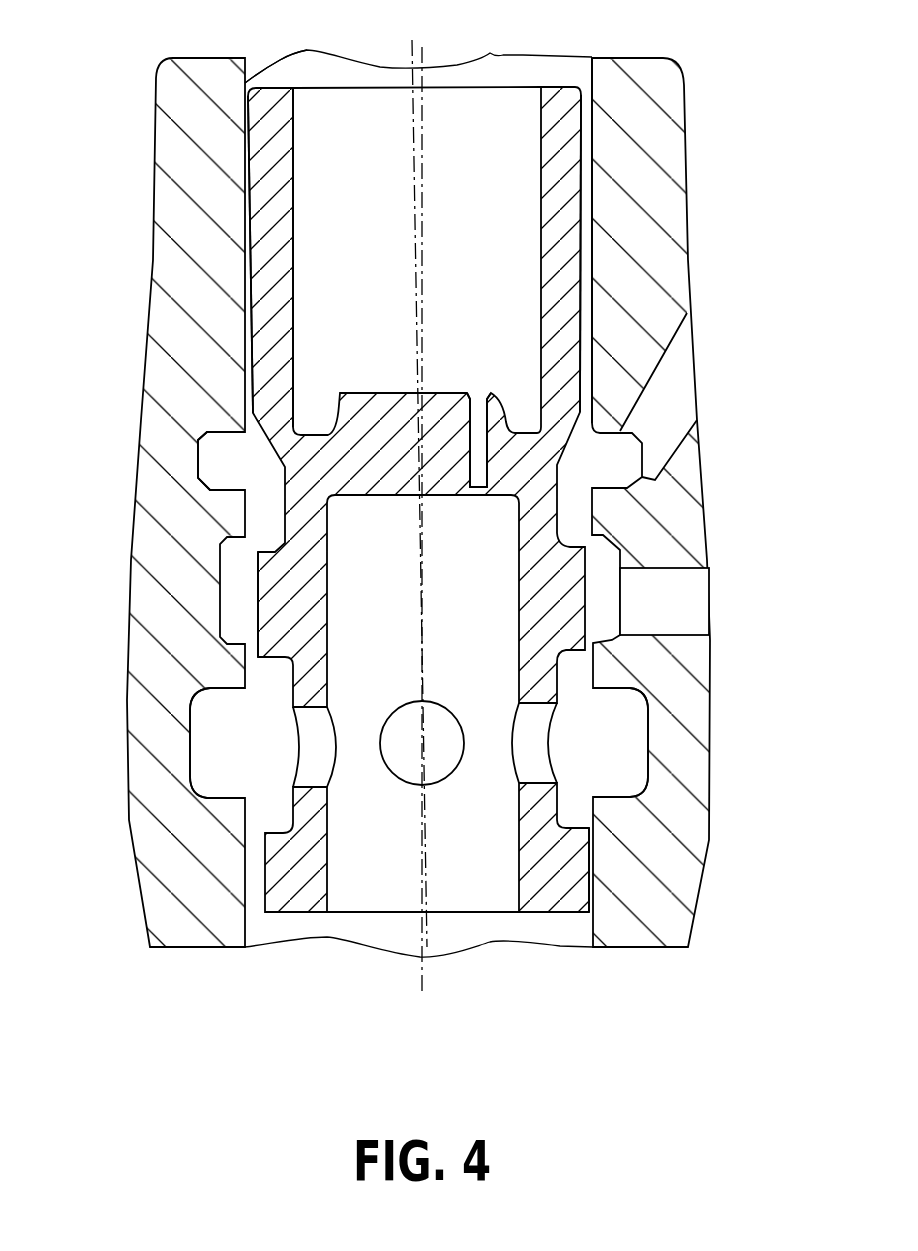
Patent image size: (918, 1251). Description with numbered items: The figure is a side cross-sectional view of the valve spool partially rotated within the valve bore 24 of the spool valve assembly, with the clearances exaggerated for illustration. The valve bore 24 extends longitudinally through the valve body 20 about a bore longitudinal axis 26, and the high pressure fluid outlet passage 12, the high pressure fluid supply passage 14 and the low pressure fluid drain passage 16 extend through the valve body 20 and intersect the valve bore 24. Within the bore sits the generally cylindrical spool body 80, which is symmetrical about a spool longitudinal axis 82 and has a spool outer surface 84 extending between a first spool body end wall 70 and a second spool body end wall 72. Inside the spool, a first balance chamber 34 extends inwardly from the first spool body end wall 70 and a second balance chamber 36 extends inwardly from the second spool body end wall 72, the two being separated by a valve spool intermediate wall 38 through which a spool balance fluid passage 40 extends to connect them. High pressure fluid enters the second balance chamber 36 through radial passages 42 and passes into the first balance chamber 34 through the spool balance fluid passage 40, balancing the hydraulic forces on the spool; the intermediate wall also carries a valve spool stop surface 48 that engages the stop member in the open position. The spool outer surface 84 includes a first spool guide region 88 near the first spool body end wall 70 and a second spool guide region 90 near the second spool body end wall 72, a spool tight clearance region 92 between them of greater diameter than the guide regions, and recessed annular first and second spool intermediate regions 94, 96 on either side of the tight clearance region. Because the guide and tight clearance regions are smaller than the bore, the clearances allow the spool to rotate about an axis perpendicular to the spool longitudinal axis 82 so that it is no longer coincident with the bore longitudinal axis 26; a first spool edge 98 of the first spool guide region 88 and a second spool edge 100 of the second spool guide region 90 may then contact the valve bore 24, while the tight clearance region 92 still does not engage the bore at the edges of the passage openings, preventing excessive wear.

The high pressure fluid outlet passage 12 is at (657, 612).
The high pressure fluid supply passage 14 is at (175, 669).
The low pressure fluid drain passage 16 is at (680, 385).
The valve body 20 is at (672, 927).
The valve bore 24 is at (270, 72).
The bore longitudinal axis 26 is at (423, 62).
The first balance chamber 34 is at (310, 222).
The second balance chamber 36 is at (455, 897).
The valve spool intermediate wall 38 is at (353, 447).
The spool balance fluid passage 40 is at (480, 462).
The radial passages 42 is at (430, 703).
The valve spool stop surface 48 is at (345, 390).
The first spool body end wall 70 is at (303, 87).
The second spool body end wall 72 is at (371, 915).
The spool body 80 is at (267, 917).
The spool longitudinal axis 82 is at (410, 58).
The spool outer surface 84 is at (574, 97).
The first spool guide region 88 is at (580, 240).
The second spool guide region 90 is at (265, 870).
The spool tight clearance region 92 is at (258, 604).
The first spool intermediate region 94 is at (293, 434).
The second spool intermediate region 96 is at (555, 803).
The first spool edge 98 is at (250, 94).
The second spool edge 100 is at (585, 913).